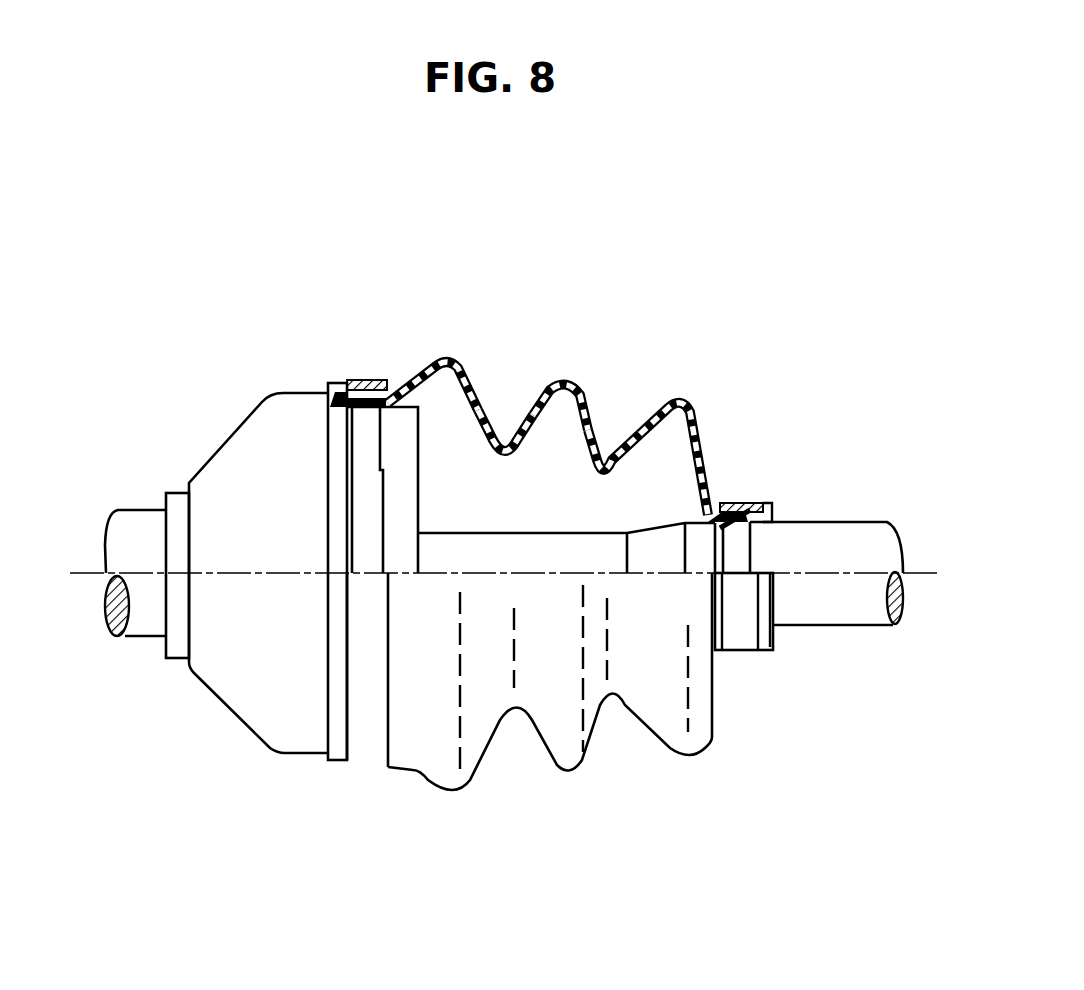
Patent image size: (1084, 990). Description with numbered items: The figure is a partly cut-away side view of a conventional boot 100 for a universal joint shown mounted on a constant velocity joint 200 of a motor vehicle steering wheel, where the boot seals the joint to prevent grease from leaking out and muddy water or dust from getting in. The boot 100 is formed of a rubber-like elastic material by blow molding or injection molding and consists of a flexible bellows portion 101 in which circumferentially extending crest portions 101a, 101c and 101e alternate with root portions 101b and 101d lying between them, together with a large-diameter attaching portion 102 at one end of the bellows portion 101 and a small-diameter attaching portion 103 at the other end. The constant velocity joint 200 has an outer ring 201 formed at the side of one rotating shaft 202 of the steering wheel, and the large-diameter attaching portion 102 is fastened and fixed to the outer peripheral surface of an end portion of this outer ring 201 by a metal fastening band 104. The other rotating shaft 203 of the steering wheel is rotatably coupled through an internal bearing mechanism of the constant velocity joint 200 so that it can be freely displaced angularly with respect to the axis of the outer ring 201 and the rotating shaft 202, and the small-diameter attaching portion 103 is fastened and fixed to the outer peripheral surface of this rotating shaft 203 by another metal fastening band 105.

The boot 100 is at (556, 300).
The bellows portion 101 is at (582, 780).
The crest portion 101a is at (453, 353).
The root portion 101b is at (505, 443).
The crest portion 101c is at (572, 377).
The root portion 101d is at (610, 463).
The crest portion 101e is at (683, 400).
The large-diameter attaching portion 102 is at (365, 402).
The small-diameter attaching portion 103 is at (768, 505).
The metal fastening band 104 is at (370, 745).
The metal fastening band 105 is at (740, 635).
The constant velocity joint 200 is at (200, 418).
The outer ring 201 is at (272, 432).
The rotating shaft 202 is at (137, 523).
The rotating shaft 203 is at (835, 603).